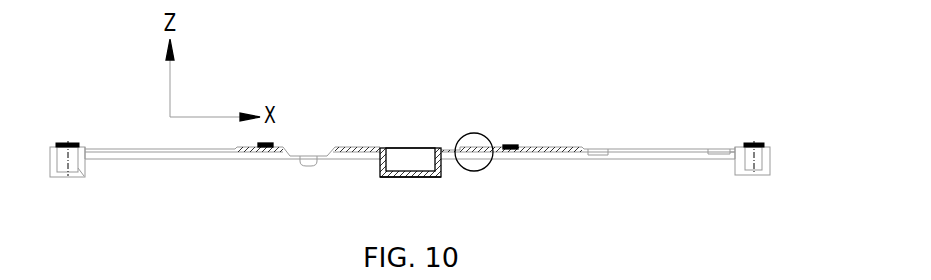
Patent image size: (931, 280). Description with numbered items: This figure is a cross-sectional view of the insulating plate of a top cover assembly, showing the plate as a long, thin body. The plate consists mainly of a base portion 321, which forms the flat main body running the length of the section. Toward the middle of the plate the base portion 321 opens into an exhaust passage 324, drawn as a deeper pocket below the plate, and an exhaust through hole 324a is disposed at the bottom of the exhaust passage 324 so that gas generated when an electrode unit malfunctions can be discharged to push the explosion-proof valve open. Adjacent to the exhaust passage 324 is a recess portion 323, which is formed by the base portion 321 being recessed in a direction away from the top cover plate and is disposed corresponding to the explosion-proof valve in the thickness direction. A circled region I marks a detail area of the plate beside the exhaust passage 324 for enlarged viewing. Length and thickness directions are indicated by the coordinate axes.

The base portion 321 is at (553, 148).
The recess portion 323 is at (456, 158).
The exhaust passage 324 is at (393, 161).
The exhaust through hole 324a is at (408, 175).
The detail region I is at (483, 169).